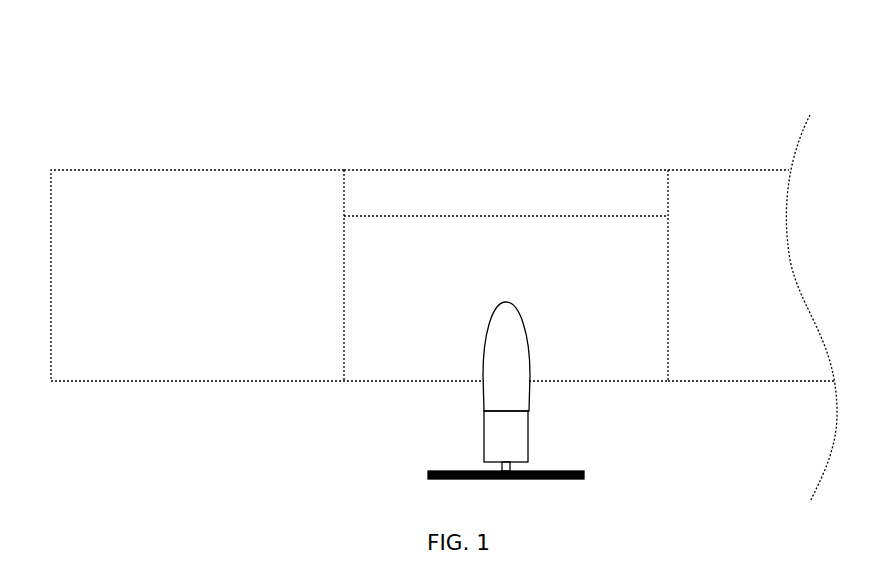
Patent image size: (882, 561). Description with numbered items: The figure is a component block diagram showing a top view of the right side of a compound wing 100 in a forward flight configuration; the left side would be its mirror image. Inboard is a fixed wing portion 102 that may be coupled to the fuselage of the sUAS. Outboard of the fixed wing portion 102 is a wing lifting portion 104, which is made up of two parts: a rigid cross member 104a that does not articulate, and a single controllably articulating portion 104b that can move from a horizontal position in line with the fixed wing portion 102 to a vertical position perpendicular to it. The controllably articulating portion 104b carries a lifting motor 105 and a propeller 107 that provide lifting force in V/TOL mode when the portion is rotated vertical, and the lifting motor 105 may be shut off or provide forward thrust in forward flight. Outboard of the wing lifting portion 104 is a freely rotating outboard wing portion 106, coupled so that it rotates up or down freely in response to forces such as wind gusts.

The compound wing 100 is at (444, 258).
The fixed wing portion 102 is at (737, 166).
The wing lifting portion 104 is at (488, 268).
The rigid cross member 104a is at (381, 181).
The controllably articulating portion 104b is at (419, 365).
The lifting motor 105 is at (481, 426).
The freely rotating outboard wing portion 106 is at (142, 166).
The propeller 107 is at (572, 466).